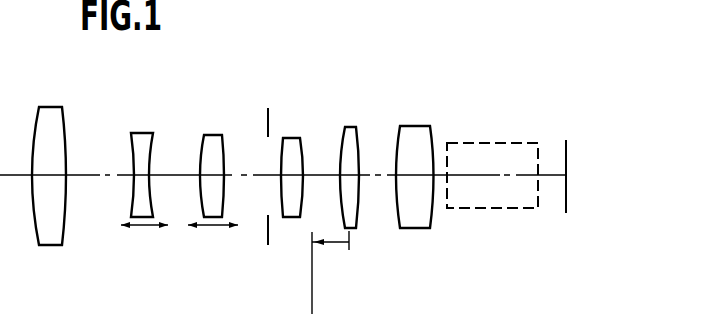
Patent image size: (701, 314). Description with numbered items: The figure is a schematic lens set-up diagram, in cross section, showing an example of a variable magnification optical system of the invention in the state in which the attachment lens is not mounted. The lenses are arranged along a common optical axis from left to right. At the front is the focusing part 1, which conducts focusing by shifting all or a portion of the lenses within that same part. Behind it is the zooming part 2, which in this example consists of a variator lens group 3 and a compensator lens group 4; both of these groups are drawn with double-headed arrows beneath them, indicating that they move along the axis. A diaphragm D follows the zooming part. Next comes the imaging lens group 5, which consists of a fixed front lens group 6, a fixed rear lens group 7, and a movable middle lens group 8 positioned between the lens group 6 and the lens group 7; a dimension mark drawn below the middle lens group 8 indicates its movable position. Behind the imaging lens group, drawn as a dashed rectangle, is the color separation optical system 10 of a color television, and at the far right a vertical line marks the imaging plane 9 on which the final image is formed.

The focusing part 1 is at (47, 108).
The zooming part 2 is at (242, 111).
The variator lens group 3 is at (133, 143).
The compensator lens group 4 is at (218, 149).
The diaphragm D is at (267, 113).
The imaging lens group 5 is at (440, 112).
The fixed front lens group 6 is at (296, 143).
The movable middle lens group 8 is at (352, 139).
The fixed rear lens group 7 is at (424, 137).
The color separation optical system 10 is at (465, 143).
The imaging plane 9 is at (565, 148).